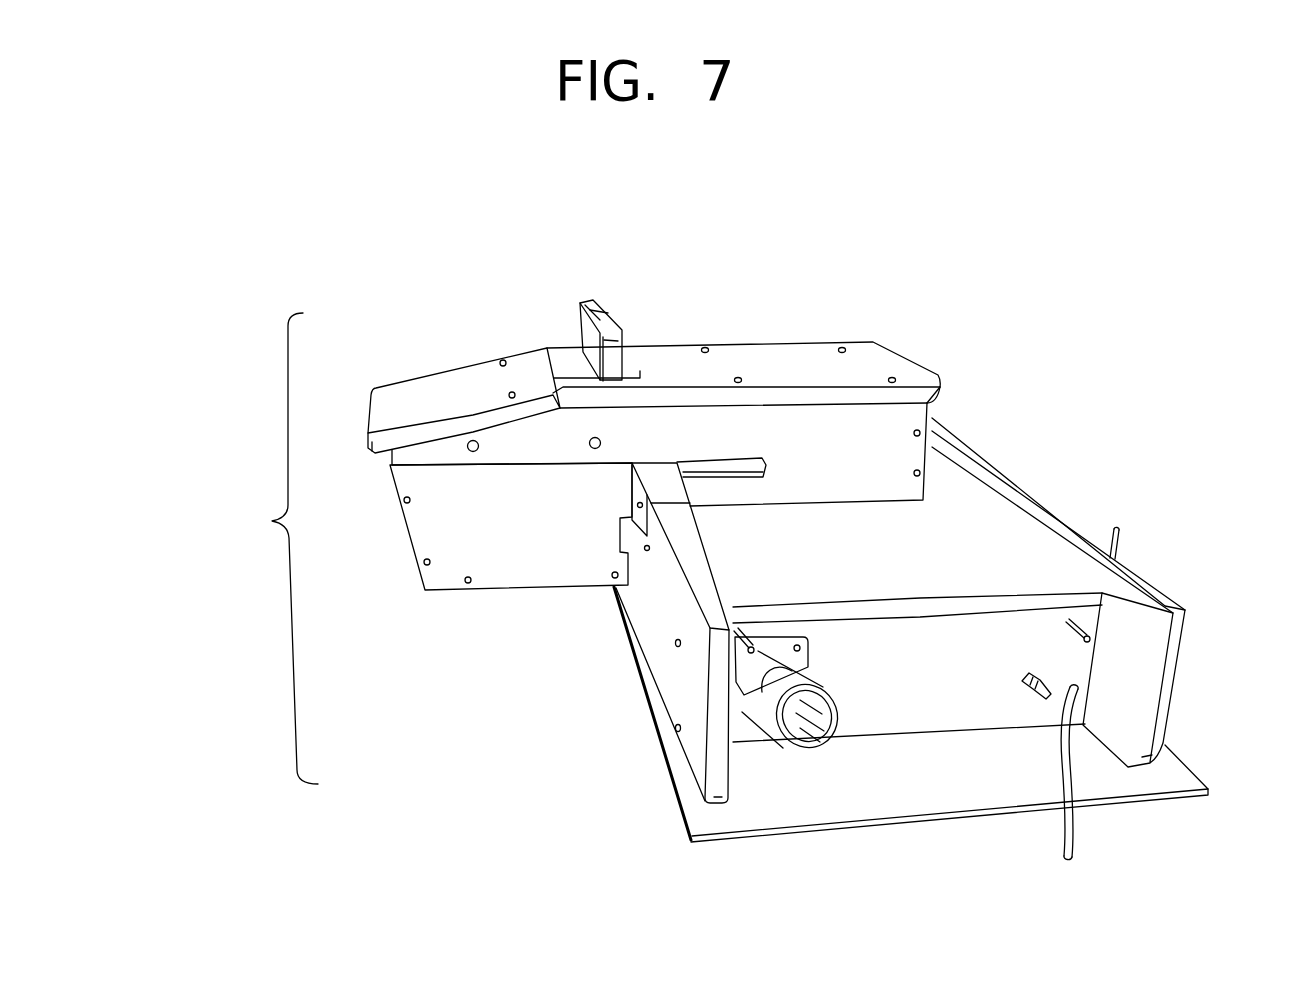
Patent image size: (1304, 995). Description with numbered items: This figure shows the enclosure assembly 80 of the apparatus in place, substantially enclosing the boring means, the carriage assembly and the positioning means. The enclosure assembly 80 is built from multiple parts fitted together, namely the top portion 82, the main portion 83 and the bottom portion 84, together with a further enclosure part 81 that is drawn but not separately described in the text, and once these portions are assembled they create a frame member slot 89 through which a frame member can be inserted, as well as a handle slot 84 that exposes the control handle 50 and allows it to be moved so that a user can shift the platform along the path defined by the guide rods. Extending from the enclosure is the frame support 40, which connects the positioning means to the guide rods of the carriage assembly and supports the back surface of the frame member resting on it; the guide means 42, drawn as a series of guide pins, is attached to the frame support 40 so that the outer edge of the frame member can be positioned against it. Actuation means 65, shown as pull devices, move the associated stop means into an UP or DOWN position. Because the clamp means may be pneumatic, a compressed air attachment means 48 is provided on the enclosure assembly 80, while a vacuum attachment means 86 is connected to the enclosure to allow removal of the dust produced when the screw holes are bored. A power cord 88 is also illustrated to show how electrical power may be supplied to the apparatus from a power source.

The frame support 40 is at (1180, 600).
The guide means 42 is at (1122, 553).
The compressed air attachment means 48 is at (1024, 678).
The control handle 50 is at (603, 300).
The actuation means 65 is at (738, 633).
The enclosure assembly 80 is at (268, 548).
The cover 81 is at (392, 395).
The top portion 82 is at (652, 607).
The main portion 83 is at (428, 519).
The handle slot 84 is at (560, 378).
The vacuum attachment means 86 is at (810, 733).
The power cord 88 is at (1072, 833).
The frame member slot 89 is at (715, 467).